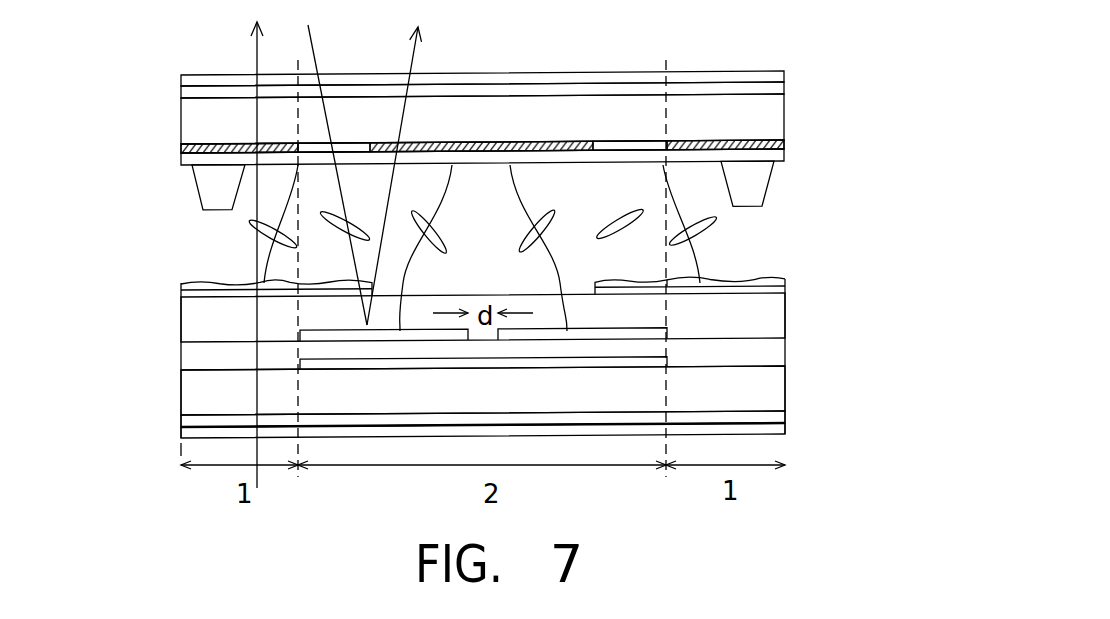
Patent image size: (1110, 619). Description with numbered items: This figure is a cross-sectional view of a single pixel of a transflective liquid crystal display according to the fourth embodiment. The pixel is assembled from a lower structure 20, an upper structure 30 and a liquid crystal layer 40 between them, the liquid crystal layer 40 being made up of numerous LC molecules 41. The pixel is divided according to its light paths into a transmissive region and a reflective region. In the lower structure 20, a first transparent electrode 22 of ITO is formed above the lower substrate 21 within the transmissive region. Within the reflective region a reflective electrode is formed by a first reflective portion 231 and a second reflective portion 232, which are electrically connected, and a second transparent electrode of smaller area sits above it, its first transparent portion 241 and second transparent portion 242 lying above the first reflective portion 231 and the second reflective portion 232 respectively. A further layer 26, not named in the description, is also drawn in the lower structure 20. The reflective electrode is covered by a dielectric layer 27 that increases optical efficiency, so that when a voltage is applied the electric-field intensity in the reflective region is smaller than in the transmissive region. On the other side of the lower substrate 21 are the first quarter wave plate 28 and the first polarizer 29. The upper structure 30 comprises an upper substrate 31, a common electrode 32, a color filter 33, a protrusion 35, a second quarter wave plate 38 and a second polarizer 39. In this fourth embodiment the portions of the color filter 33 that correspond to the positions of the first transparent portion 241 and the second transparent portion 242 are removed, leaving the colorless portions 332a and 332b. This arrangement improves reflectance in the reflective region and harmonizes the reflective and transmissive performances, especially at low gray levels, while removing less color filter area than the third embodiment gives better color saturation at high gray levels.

The lower structure 20 is at (465, 371).
The lower substrate 21 is at (763, 393).
The first transparent electrode 22 is at (520, 276).
The insulating layer 26 is at (645, 362).
The dielectric layer 27 is at (778, 320).
The first quarter wave plate 28 is at (767, 417).
The first polarizer 29 is at (768, 432).
The upper structure 30 is at (458, 127).
The upper substrate 31 is at (770, 118).
The common electrode 32 is at (775, 156).
The color filter 33 is at (780, 147).
The protrusion 35 is at (497, 199).
The second quarter wave plate 38 is at (772, 88).
The second polarizer 39 is at (758, 76).
The liquid crystal layer 40 is at (111, 172).
The LC molecules 41 is at (350, 233).
The first reflective portion 231 is at (312, 335).
The second reflective portion 232 is at (607, 332).
The first transparent portion 241 is at (276, 272).
The second transparent portion 242 is at (631, 271).
The colorless portion 332a is at (352, 147).
The colorless portion 332b is at (625, 145).